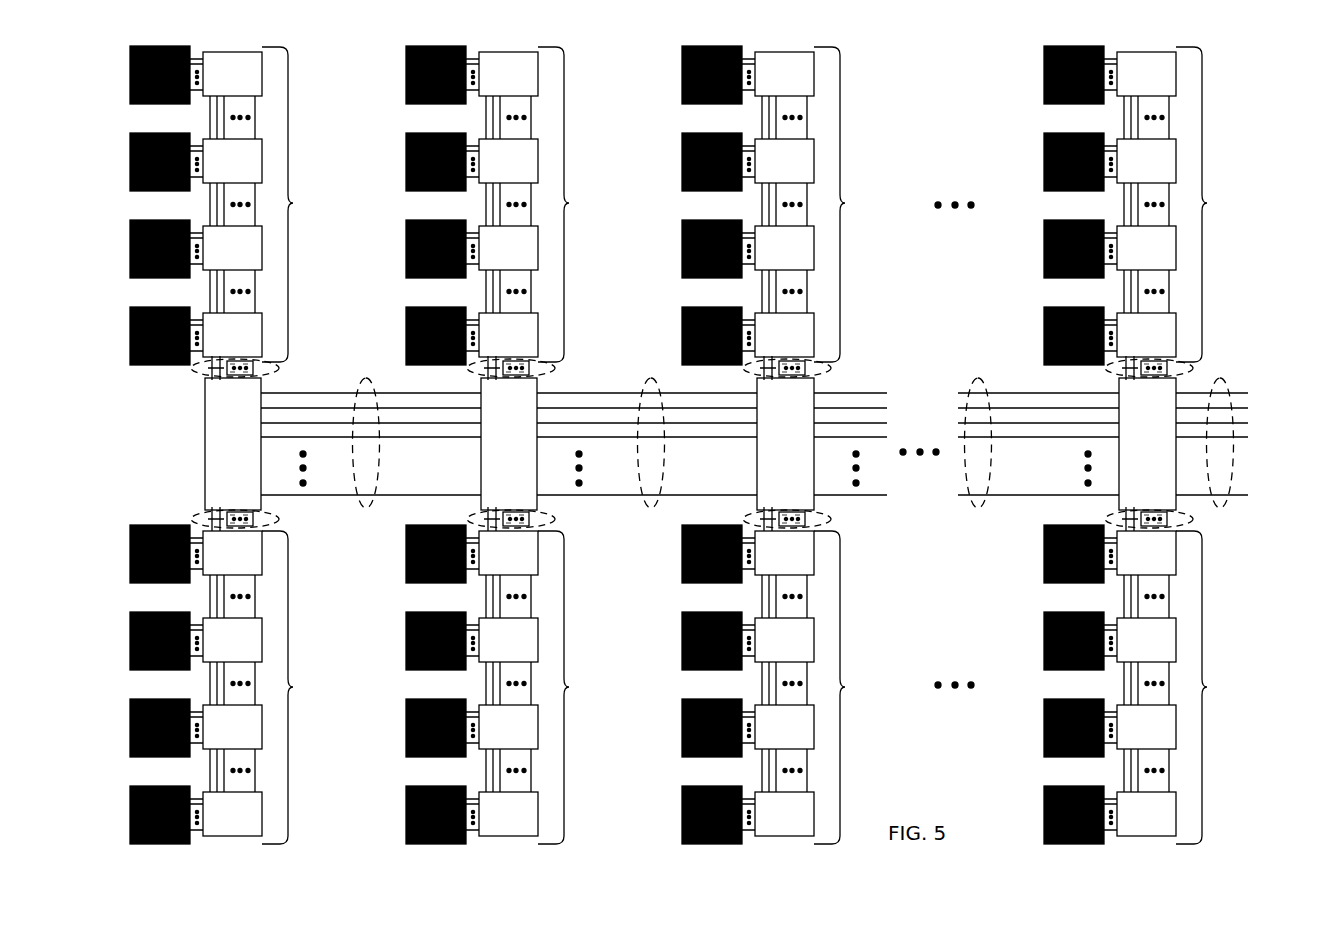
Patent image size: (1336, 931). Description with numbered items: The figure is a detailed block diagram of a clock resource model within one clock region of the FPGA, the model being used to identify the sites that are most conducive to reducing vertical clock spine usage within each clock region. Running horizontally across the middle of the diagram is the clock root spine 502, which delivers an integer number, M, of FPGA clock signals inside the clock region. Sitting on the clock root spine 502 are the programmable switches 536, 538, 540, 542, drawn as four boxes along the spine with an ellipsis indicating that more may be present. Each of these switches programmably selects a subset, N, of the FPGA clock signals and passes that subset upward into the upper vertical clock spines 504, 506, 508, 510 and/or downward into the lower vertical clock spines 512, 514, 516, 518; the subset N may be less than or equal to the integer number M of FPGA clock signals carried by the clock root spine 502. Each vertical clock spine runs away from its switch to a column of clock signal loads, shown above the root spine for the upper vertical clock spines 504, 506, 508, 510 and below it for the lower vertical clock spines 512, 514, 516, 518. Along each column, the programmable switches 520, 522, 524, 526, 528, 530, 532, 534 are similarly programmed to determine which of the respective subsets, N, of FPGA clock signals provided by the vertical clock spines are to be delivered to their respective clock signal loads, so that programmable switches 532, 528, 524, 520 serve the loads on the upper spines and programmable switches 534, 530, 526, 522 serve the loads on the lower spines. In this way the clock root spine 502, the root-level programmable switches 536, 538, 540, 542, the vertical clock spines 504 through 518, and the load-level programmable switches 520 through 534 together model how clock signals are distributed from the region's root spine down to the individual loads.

The clock root spine 502 is at (754, 471).
The upper vertical clock spine 504 is at (1106, 369).
The upper vertical clock spine 506 is at (823, 368).
The upper vertical clock spine 508 is at (547, 368).
The upper vertical clock spine 510 is at (271, 368).
The lower vertical clock spine 512 is at (1112, 519).
The lower vertical clock spine 514 is at (823, 518).
The lower vertical clock spine 516 is at (547, 518).
The lower vertical clock spine 518 is at (271, 518).
The programmable switch 520 is at (1150, 205).
The programmable switch 522 is at (1150, 684).
The programmable switch 524 is at (789, 205).
The programmable switch 526 is at (788, 684).
The programmable switch 528 is at (511, 205).
The programmable switch 530 is at (511, 684).
The programmable switch 532 is at (235, 205).
The programmable switch 534 is at (235, 684).
The programmable switch 536 is at (1132, 449).
The programmable switch 538 is at (771, 449).
The programmable switch 540 is at (494, 449).
The programmable switch 542 is at (218, 449).